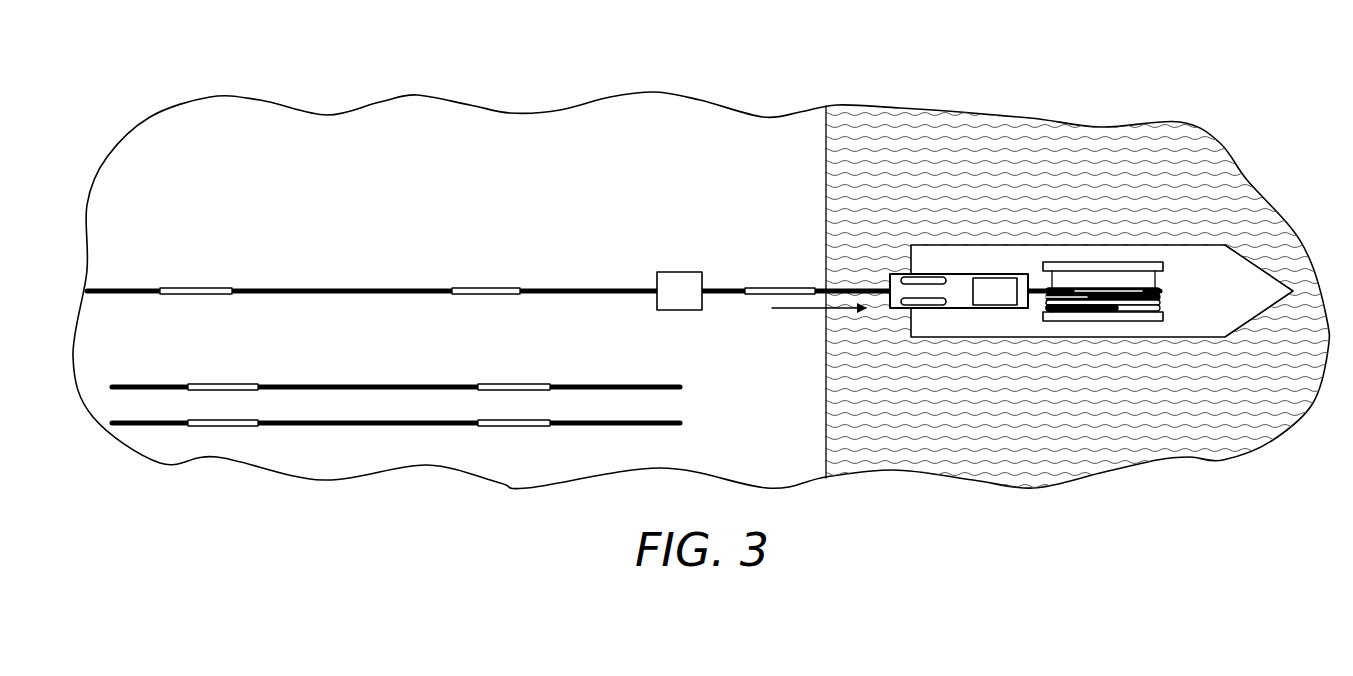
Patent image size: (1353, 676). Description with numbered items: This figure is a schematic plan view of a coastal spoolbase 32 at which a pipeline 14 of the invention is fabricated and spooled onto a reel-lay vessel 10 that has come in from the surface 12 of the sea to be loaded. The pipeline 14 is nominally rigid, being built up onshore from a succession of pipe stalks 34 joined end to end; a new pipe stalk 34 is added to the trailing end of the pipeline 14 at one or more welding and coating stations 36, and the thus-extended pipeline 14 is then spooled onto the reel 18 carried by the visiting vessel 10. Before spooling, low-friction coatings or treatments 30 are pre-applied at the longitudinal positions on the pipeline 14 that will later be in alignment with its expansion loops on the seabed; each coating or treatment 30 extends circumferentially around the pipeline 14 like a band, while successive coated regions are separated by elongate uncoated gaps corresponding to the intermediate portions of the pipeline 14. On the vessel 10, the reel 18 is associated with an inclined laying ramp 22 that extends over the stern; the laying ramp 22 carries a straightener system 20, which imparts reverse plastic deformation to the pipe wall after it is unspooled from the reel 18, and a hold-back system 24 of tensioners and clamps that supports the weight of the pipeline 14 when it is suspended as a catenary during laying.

The reel-lay vessel 10 is at (1212, 338).
The surface of the sea 12 is at (1172, 132).
The pipeline 14 is at (583, 258).
The reel 18 is at (1067, 321).
The straightener system 20 is at (993, 280).
The laying ramp 22 is at (897, 310).
The hold-back system 24 is at (924, 278).
The low-friction coating or treatment 30 is at (194, 289).
The coastal spoolbase 32 is at (425, 100).
The pipe stalk 34 is at (337, 289).
The welding and coating station 36 is at (677, 272).